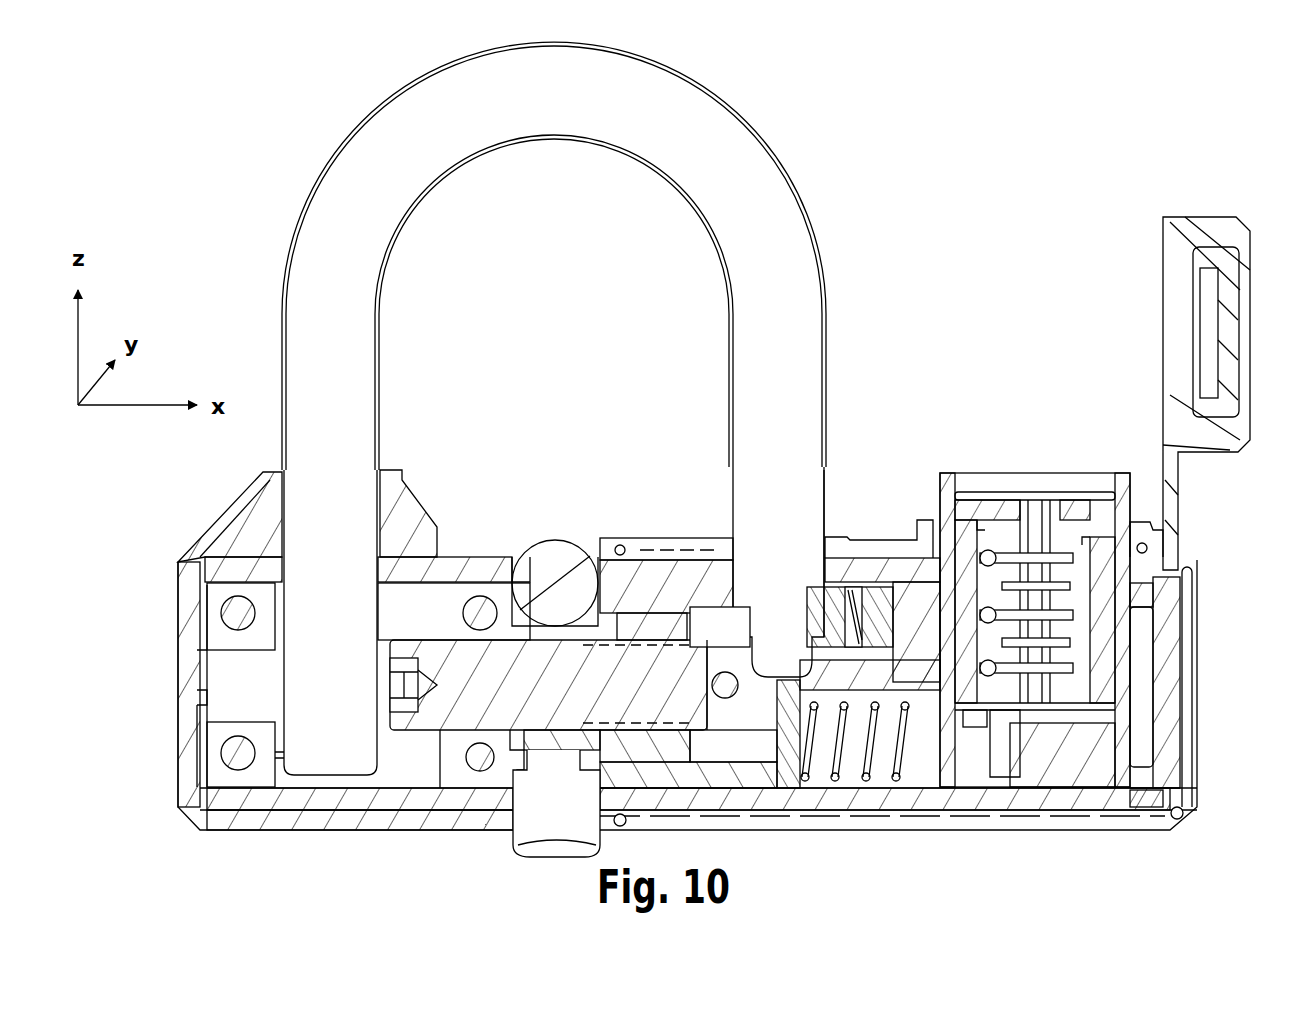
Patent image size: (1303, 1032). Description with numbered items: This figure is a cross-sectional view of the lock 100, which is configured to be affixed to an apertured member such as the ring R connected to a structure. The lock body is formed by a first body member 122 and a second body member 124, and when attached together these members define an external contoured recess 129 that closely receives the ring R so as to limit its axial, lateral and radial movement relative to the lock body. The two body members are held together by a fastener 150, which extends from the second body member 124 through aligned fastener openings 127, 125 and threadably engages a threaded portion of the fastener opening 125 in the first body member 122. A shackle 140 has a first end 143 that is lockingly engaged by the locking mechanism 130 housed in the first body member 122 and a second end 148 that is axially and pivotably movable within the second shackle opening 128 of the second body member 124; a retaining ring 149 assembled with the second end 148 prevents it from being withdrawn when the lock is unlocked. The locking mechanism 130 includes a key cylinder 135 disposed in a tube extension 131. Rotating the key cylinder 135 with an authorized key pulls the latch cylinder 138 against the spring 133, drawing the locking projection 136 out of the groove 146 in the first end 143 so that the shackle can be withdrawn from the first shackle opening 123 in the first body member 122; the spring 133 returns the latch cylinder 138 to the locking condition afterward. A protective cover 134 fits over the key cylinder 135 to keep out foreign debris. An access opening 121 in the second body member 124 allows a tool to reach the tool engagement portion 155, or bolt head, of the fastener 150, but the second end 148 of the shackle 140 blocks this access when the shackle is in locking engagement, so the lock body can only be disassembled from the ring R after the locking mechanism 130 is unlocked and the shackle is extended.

The lock 100 is at (222, 188).
The shackle 140 is at (700, 127).
The first end of the shackle 143 is at (797, 483).
The second body member 124 is at (207, 538).
The second shackle opening 128 is at (378, 507).
The second end of the shackle 148 is at (298, 613).
The access opening 121 is at (192, 708).
The retaining ring 149 is at (275, 758).
The fastener 150 is at (455, 662).
The tool engagement portion 155 is at (405, 706).
The fastener opening 127 is at (460, 722).
The recess 129 is at (548, 545).
The ring R is at (600, 643).
The groove 146 is at (712, 565).
The fastener opening 125 is at (610, 650).
The locking projection 136 is at (808, 605).
The latch cylinder 138 is at (787, 770).
The spring 133 is at (845, 762).
The first shackle opening 123 is at (822, 558).
The locking mechanism 130 is at (1080, 330).
The key cylinder 135 is at (992, 510).
The tube extension 131 is at (1122, 493).
The first body member 122 is at (1165, 722).
The protective cover 134 is at (1223, 215).